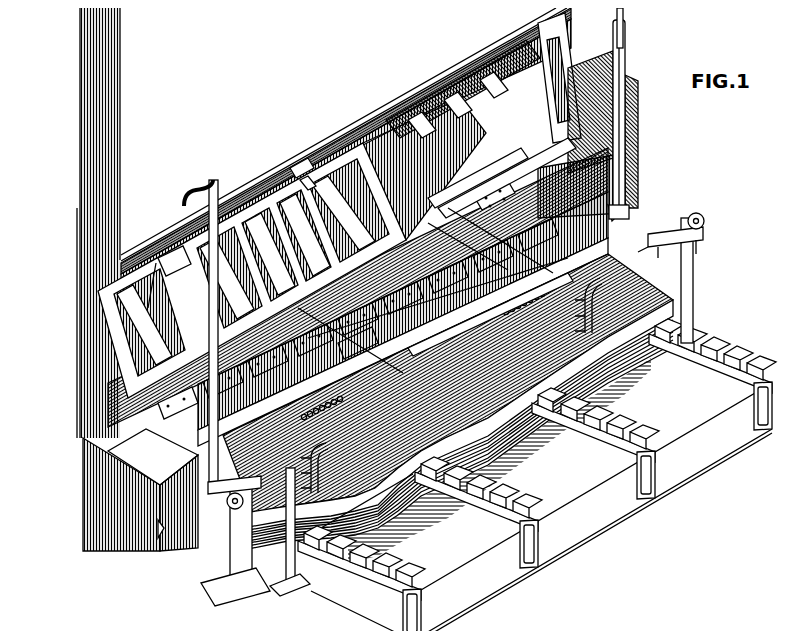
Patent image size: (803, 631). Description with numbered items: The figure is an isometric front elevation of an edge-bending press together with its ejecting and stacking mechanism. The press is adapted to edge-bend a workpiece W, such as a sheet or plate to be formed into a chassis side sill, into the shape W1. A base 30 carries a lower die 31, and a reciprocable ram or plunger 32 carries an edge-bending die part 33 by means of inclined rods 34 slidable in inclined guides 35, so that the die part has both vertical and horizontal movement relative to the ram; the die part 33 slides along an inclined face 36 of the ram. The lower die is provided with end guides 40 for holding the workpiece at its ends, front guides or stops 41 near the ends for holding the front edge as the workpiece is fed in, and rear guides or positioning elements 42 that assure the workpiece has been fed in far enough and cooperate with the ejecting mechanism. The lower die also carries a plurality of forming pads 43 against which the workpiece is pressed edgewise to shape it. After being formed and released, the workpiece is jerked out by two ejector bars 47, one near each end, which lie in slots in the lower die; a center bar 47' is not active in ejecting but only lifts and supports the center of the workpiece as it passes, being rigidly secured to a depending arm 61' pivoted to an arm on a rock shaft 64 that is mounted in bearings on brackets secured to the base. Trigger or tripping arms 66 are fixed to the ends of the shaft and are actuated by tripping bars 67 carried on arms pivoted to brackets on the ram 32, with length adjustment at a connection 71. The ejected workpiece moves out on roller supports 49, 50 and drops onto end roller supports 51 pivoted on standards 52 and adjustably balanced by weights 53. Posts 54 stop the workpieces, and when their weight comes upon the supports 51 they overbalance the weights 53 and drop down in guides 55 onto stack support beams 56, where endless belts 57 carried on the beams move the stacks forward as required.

The base 30 is at (135, 535).
The lower die 31 is at (128, 450).
The ram 32 is at (235, 64).
The edge-bending die part 33 is at (346, 250).
The inclined rods 34 is at (263, 190).
The inclined guides 35 is at (292, 170).
The inclined face 36 is at (78, 290).
The end guides 40 is at (478, 164).
The front guides 41 is at (480, 190).
The rear guides 42 is at (440, 215).
The forming pads 43 is at (452, 210).
The ejector bars 47 is at (327, 309).
The center bar 47' is at (340, 338).
The roller supports 49 is at (285, 366).
The roller supports 50 is at (278, 418).
The end roller supports 51 is at (663, 268).
The standards 52 is at (696, 304).
The weights 53 is at (689, 205).
The posts 54 is at (292, 502).
The guides 55 is at (580, 308).
The stack support beams 56 is at (567, 556).
The endless belts 57 is at (487, 512).
The depending arm 61' is at (490, 314).
The rock shaft 64 is at (565, 203).
The tripping arms 66 is at (153, 525).
The tripping bars 67 is at (609, 56).
The connection 71 is at (617, 26).
The workpiece W is at (469, 159).
The bent workpiece shape W1 is at (524, 396).